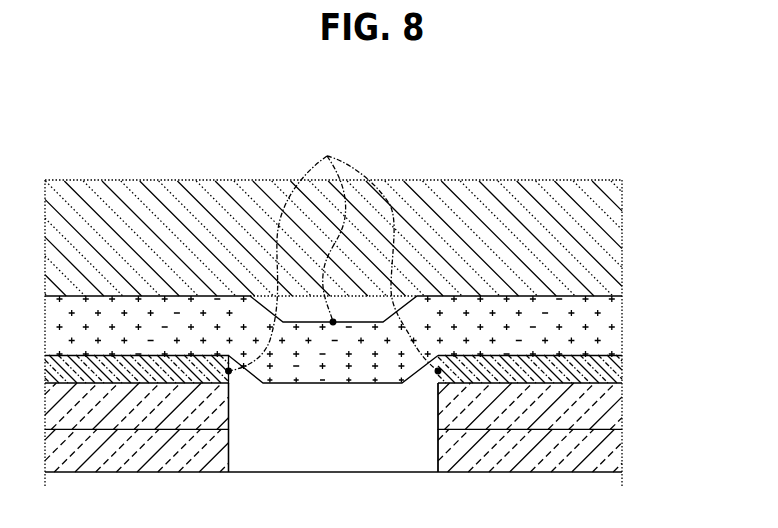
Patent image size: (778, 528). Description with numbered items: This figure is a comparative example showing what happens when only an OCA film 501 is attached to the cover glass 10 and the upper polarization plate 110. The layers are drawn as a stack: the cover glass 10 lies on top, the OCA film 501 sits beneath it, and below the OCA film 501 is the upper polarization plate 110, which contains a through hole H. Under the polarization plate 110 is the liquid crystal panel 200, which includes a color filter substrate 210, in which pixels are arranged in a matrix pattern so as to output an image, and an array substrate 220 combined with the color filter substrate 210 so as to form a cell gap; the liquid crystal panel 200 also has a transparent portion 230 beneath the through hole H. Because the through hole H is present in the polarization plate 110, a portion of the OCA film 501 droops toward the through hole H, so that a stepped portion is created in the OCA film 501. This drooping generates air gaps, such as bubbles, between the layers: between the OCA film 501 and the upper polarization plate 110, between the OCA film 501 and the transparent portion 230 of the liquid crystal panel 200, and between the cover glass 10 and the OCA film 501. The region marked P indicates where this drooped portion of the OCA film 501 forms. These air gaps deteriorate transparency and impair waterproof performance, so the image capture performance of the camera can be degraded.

The cover glass 10 is at (623, 229).
The OCA film 501 is at (623, 323).
The upper polarization plate 110 is at (623, 366).
The liquid crystal panel 200 is at (385, 427).
The color filter substrate 210 is at (619, 412).
The array substrate 220 is at (619, 445).
The transparent portion 230 is at (351, 460).
The through hole H is at (418, 383).
The plasma region P is at (333, 251).